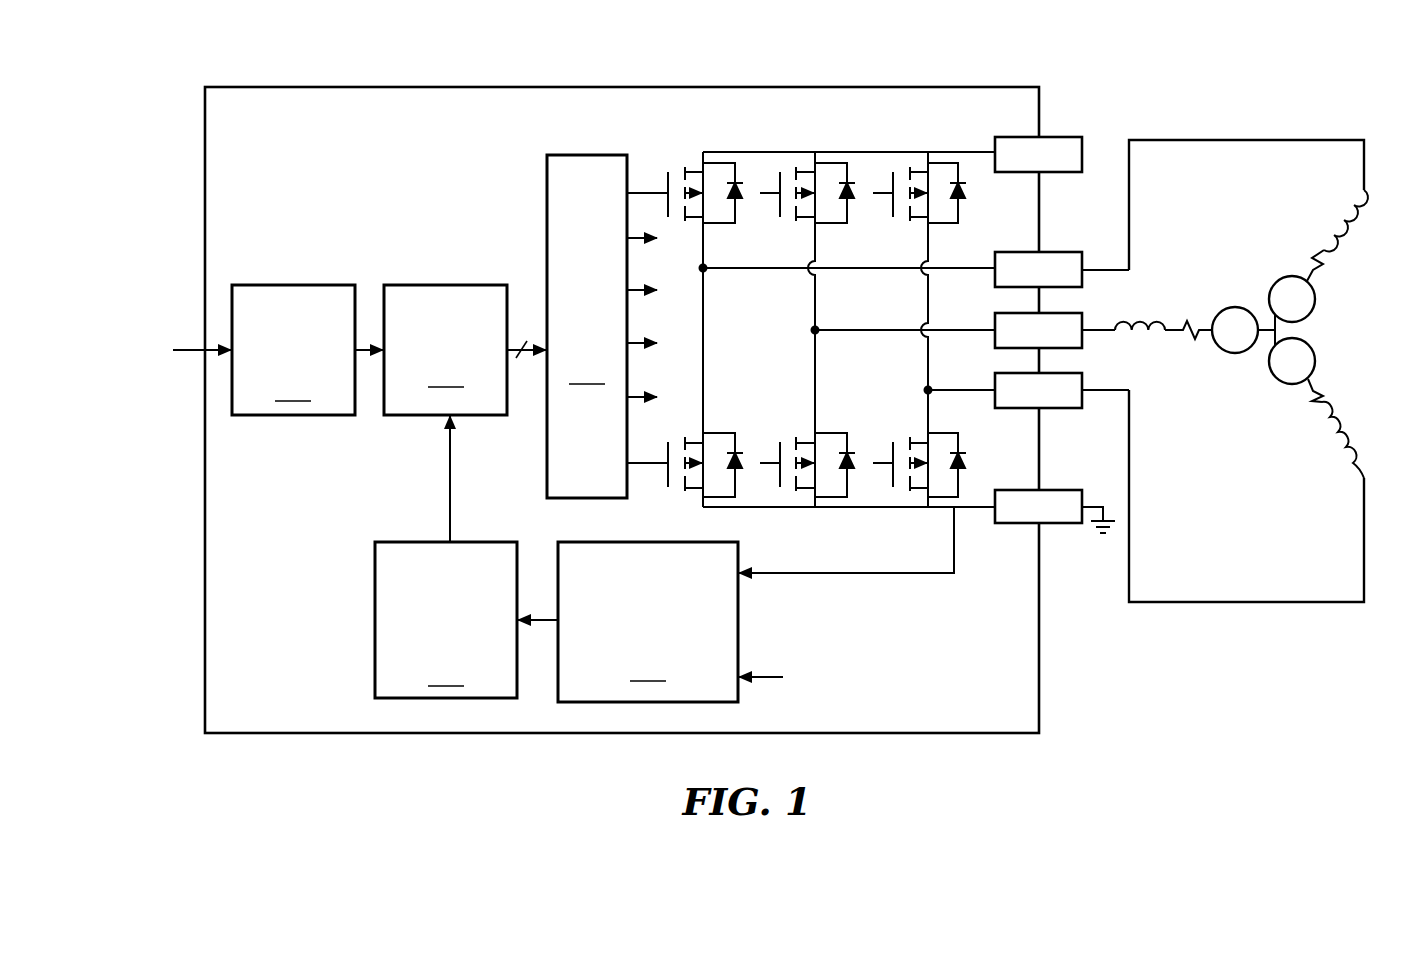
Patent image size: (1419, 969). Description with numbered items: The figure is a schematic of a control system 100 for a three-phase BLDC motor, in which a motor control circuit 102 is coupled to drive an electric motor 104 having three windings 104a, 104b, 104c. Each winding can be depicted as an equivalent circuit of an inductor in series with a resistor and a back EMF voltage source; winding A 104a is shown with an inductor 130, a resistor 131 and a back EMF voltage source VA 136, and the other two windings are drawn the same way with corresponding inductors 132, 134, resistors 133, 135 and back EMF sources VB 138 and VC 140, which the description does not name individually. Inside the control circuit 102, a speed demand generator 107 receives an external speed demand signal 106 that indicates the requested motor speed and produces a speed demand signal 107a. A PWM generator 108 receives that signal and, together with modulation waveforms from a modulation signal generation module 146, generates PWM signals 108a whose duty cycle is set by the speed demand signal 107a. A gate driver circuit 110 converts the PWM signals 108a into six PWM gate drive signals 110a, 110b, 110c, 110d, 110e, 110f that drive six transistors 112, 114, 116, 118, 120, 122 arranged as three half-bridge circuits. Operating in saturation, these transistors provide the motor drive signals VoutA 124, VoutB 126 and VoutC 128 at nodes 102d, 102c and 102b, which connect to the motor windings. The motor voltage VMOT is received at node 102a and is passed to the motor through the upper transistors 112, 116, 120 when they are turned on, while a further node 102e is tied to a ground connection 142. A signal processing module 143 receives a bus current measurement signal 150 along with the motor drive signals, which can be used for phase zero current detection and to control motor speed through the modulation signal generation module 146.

The control system 100 is at (1052, 62).
The motor control circuit 102 is at (228, 119).
The node 102a is at (1010, 136).
The node 102b is at (1068, 251).
The node 102c is at (995, 318).
The node 102d is at (995, 378).
The GND pin 102e is at (1000, 489).
The electric motor 104 is at (1222, 117).
The winding A 104a is at (1327, 460).
The winding 104b is at (1215, 292).
The winding 104c is at (1308, 229).
The external speed demand signal 106 is at (188, 355).
The speed demand generator 107 is at (293, 350).
The speed demand signal 107a is at (360, 345).
The PWM generator 108 is at (445, 350).
The PWM signals 108a is at (516, 344).
The gate driver circuit 110 is at (587, 326).
The PWM gate drive signal 110a is at (642, 191).
The PWM gate drive signal 110b is at (637, 243).
The PWM gate drive signal 110c is at (637, 295).
The PWM gate drive signal 110d is at (637, 348).
The PWM gate drive signal 110e is at (637, 402).
The PWM gate drive signal 110f is at (645, 468).
The upper transistor 112 is at (720, 226).
The transistor 114 is at (720, 434).
The upper transistor 116 is at (832, 226).
The transistor 118 is at (816, 433).
The upper transistor 120 is at (948, 224).
The transistor 122 is at (936, 435).
The motor drive signal VoutA 124 is at (1130, 575).
The motor drive signal VoutB 126 is at (1097, 328).
The motor drive signal VoutC 128 is at (1128, 157).
The inductor 130 is at (1352, 464).
The resistor 131 is at (1313, 401).
The phase B coil inductance 132 is at (1145, 333).
The phase B coil resistance 133 is at (1185, 336).
The phase C coil inductance 134 is at (1340, 223).
The phase C coil resistance 135 is at (1318, 262).
The back EMF voltage source VA 136 is at (1283, 384).
The back-EMF source VB 138 is at (1225, 352).
The back-EMF source VC 140 is at (1316, 305).
The ground 142 is at (1099, 503).
The signal processing module 143 is at (709, 622).
The modulation signal generation module 146 is at (446, 557).
The bus current measurement signal 150 is at (957, 546).